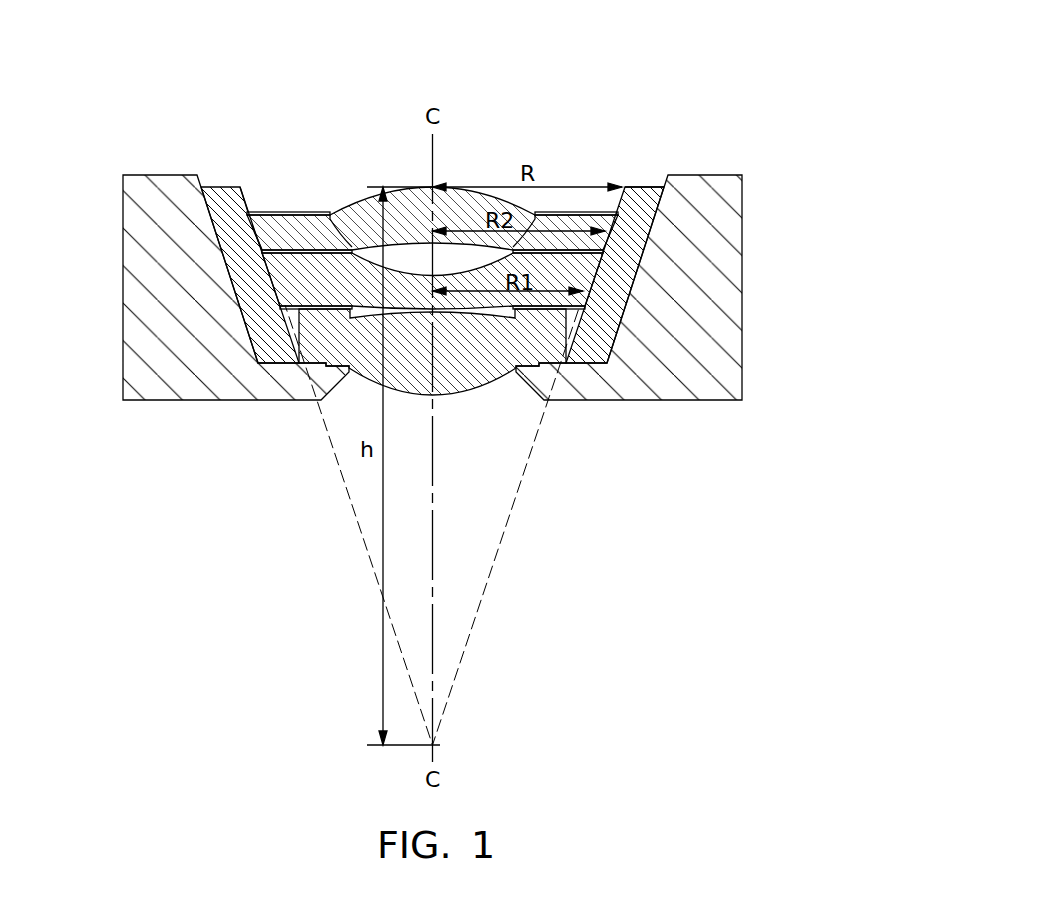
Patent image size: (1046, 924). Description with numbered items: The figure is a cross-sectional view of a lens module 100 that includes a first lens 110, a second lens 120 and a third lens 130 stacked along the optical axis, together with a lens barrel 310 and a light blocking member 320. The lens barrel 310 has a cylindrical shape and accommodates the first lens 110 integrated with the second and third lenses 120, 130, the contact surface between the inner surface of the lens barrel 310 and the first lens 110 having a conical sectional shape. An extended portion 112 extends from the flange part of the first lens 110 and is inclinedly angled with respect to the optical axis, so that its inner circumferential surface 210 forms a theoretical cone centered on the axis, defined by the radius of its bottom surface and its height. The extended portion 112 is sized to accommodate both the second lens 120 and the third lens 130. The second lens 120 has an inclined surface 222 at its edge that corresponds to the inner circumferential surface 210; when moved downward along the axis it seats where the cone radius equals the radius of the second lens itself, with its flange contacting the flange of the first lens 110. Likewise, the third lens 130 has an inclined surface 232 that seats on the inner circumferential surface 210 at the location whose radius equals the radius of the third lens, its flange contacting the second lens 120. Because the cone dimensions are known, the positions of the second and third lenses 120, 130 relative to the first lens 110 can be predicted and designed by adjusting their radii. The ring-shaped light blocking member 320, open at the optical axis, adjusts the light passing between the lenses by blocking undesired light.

The lens module 100 is at (734, 143).
The first lens 110 is at (588, 347).
The extended portion 112 is at (647, 199).
The second lens 120 is at (578, 278).
The third lens 130 is at (592, 221).
The inner circumferential surface 210 is at (262, 299).
The inclined surface 222 is at (267, 275).
The inclined surface 232 is at (248, 232).
The lens barrel 310 is at (723, 367).
The light blocking member 320 is at (302, 308).